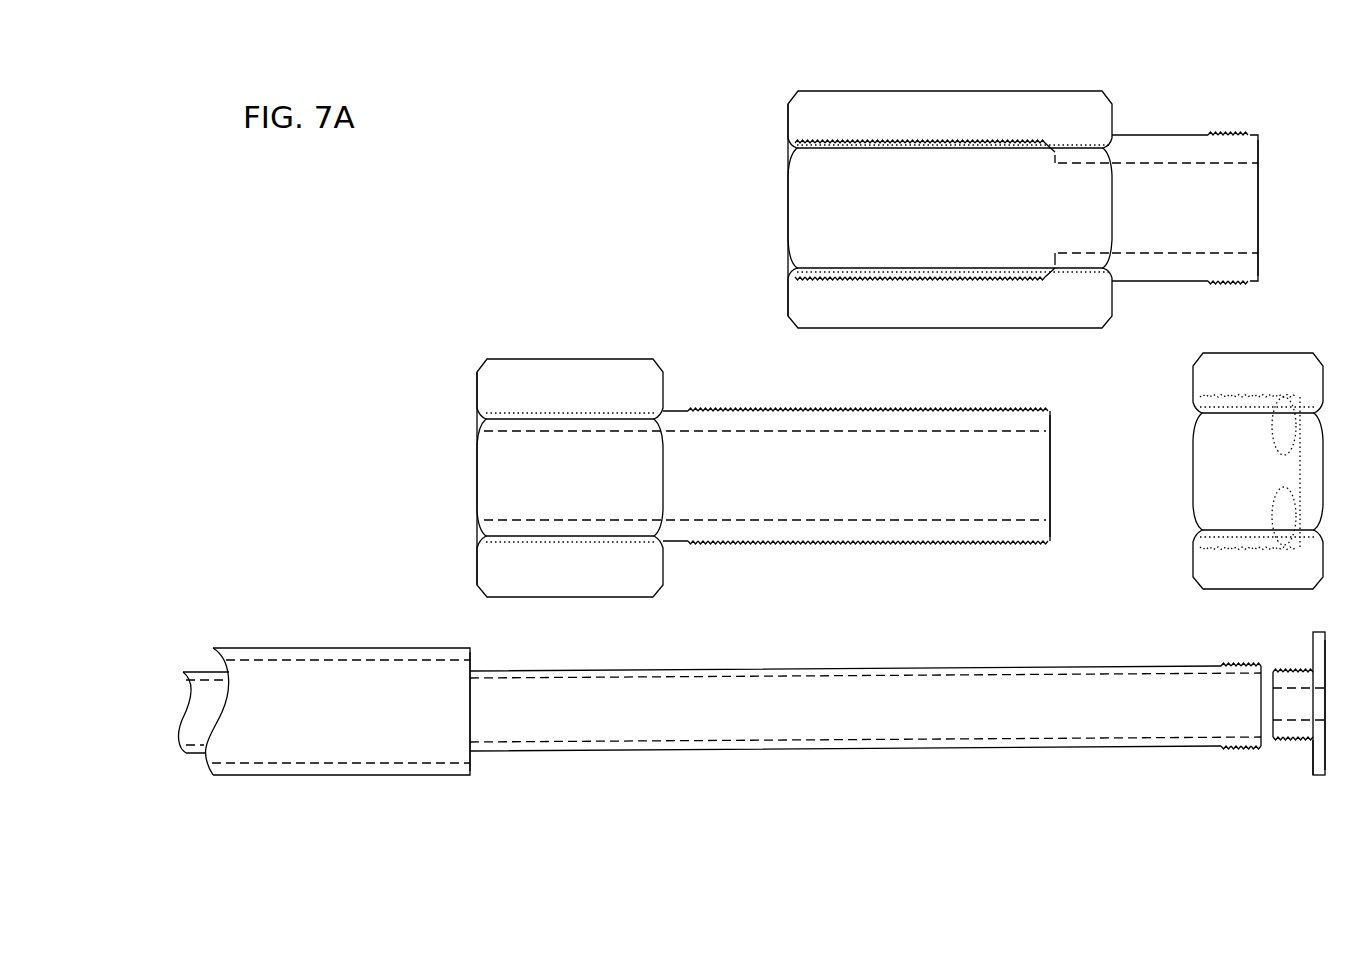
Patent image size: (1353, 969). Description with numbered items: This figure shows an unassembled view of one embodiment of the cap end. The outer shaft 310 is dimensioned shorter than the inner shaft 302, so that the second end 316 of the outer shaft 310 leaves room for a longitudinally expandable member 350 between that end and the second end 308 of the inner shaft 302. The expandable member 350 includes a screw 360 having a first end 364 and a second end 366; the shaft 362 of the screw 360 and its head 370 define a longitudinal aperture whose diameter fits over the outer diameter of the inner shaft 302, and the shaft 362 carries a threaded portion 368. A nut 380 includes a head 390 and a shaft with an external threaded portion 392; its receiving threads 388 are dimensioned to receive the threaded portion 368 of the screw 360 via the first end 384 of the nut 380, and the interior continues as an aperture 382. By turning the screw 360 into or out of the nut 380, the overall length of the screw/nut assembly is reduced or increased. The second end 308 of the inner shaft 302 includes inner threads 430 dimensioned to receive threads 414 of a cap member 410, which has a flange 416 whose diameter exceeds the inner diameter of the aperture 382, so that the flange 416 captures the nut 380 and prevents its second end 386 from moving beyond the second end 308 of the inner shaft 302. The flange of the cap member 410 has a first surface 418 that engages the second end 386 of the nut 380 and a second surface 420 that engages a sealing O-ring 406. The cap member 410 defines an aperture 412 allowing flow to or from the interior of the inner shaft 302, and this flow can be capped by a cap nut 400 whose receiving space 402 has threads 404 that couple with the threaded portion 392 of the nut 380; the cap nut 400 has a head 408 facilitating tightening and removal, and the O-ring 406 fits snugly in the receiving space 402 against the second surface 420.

The inner shaft 302 is at (587, 670).
The second end of the inner shaft 308 is at (1265, 740).
The outer shaft 310 is at (392, 647).
The second end of the outer shaft 316 is at (470, 660).
The longitudinally expandable member 350 is at (548, 105).
The screw 360 is at (612, 335).
The threaded shank 362 is at (792, 465).
The first end of the screw 364 is at (475, 423).
The second end of the screw 366 is at (1047, 394).
The threaded portion of the screw 368 is at (975, 408).
The head of the screw 370 is at (543, 358).
The nut 380 is at (902, 55).
The aperture of the nut 382 is at (1192, 198).
The first end of the nut 384 is at (770, 180).
The second end of the nut 386 is at (1298, 158).
The receiving threads of the nut 388 is at (899, 141).
The head of the nut 390 is at (965, 90).
The threaded portion of the nut 392 is at (1218, 133).
The cap nut 400 is at (1165, 393).
The receiving space of the cap nut 402 is at (1218, 488).
The threads of the cap nut 404 is at (1221, 395).
The sealing O-ring 406 is at (1283, 527).
The head of the cap nut 408 is at (1225, 355).
The cap member 410 is at (1291, 648).
The aperture of the cap member 412 is at (1292, 700).
The threads of the cap member 414 is at (1293, 740).
The flange of the cap member 416 is at (1320, 632).
The first surface of the flange 418 is at (1313, 762).
The second surface of the flange 420 is at (1325, 766).
The inner threads of the inner shaft 430 is at (1235, 676).